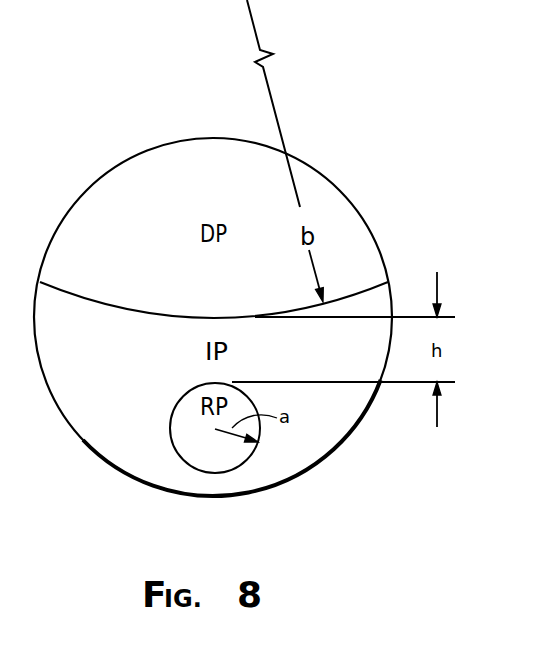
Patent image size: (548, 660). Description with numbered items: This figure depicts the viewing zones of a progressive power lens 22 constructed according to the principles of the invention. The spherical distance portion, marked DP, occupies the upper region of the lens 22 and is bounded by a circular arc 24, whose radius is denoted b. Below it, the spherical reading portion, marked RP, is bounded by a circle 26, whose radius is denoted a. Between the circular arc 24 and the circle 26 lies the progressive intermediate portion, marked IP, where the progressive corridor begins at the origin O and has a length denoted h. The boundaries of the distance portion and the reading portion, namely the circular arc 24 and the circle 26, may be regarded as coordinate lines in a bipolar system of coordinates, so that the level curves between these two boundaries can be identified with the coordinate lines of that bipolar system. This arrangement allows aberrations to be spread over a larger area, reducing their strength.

The lens 22 is at (356, 186).
The circular arc 24 is at (106, 300).
The circle 26 is at (170, 428).